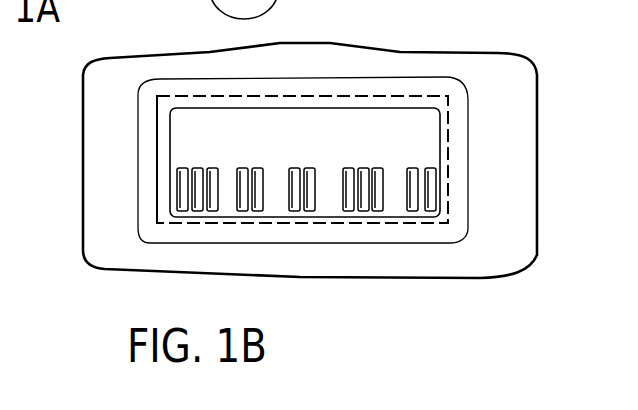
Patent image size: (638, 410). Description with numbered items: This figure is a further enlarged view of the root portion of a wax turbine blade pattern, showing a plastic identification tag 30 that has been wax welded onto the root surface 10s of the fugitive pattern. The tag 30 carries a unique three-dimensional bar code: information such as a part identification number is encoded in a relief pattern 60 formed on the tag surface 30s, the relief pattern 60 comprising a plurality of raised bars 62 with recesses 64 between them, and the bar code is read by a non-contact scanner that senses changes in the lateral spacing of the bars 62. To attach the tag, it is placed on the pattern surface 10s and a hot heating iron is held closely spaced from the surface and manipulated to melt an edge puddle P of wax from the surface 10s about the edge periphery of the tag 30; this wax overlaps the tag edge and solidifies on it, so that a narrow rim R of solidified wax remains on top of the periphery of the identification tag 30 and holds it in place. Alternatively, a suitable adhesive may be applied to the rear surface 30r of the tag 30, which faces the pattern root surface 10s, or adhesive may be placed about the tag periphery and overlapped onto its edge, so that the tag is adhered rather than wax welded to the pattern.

The root surface 10s is at (522, 163).
The edge puddle P is at (453, 108).
The narrow rim R is at (337, 108).
The plastic identification tag 30 is at (422, 135).
The tag surface 30s is at (188, 140).
The rear surface 30r is at (148, 194).
The relief pattern 60 is at (242, 220).
The raised bars 62 is at (378, 213).
The recesses 64 is at (422, 185).